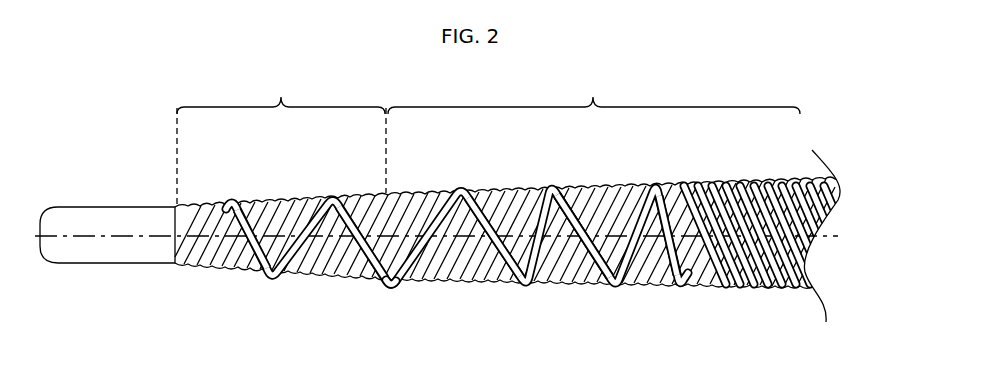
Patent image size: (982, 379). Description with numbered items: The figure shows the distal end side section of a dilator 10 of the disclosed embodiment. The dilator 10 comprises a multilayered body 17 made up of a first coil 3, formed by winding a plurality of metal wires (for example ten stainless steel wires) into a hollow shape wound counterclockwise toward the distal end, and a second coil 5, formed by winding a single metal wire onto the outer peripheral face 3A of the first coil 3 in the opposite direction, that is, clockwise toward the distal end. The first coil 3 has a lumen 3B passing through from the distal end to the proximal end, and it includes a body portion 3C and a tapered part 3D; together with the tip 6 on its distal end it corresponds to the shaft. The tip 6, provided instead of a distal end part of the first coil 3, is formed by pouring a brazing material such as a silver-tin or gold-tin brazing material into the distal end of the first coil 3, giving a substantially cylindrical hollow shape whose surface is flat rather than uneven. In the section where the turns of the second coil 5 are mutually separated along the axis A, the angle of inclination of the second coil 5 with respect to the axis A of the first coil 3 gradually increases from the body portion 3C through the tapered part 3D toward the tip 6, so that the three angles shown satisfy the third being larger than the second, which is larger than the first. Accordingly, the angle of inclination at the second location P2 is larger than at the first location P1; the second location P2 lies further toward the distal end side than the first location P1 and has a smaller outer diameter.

The dilator 10 is at (831, 120).
The multilayered body 17 is at (765, 159).
The first coil 3 is at (591, 186).
The outer peripheral face 3A is at (490, 290).
The lumen 3B is at (627, 262).
The body portion 3C is at (593, 132).
The tapered part 3D is at (281, 137).
The second coil 5 is at (391, 293).
The tip 6 is at (101, 214).
The axis A is at (100, 240).
The first location P1 is at (355, 177).
The second location P2 is at (247, 186).